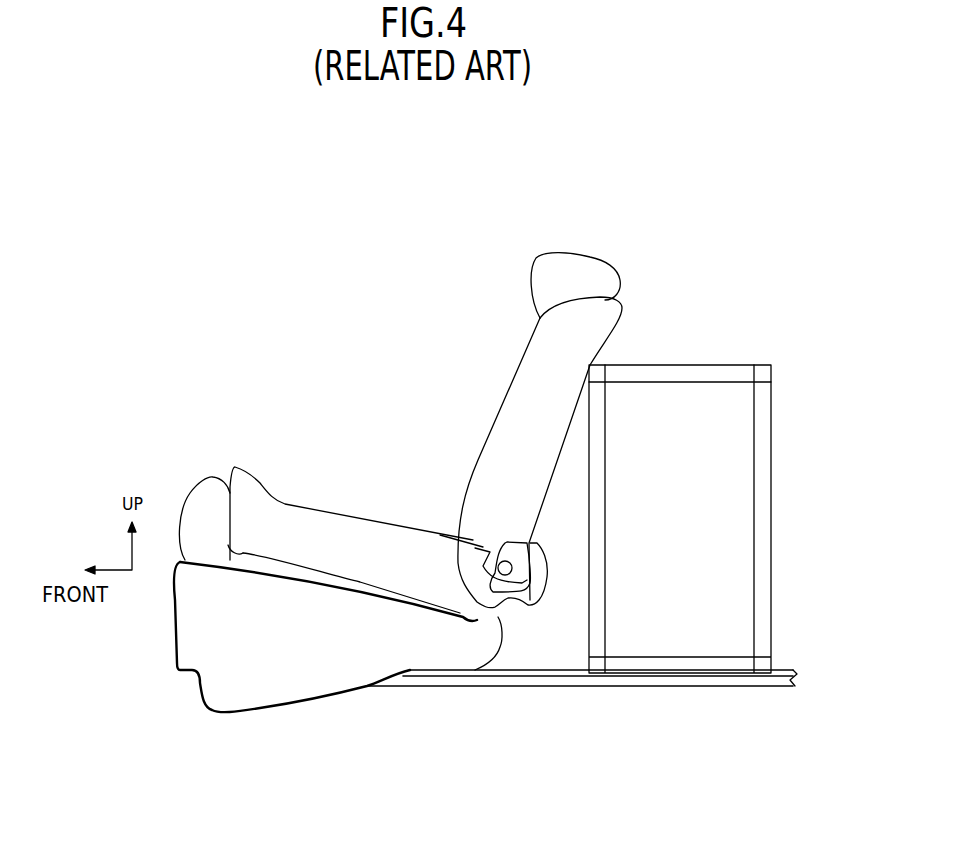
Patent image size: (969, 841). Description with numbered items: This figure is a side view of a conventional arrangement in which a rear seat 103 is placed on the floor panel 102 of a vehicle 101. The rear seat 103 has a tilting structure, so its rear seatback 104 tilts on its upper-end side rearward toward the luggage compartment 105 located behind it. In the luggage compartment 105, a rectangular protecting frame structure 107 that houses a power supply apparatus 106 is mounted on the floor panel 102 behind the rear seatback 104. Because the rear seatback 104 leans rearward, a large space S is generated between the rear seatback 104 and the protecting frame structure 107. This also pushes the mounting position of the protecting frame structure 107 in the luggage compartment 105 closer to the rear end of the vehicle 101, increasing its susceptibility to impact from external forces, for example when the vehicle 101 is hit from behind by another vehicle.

The vehicle 101 is at (363, 468).
The floor panel 102 is at (510, 683).
The rear seat 103 is at (270, 395).
The rear seatback 104 is at (500, 425).
The luggage compartment 105 is at (720, 457).
The power supply apparatus 106 is at (738, 593).
The protecting frame structure 107 is at (770, 397).
The space S is at (568, 548).